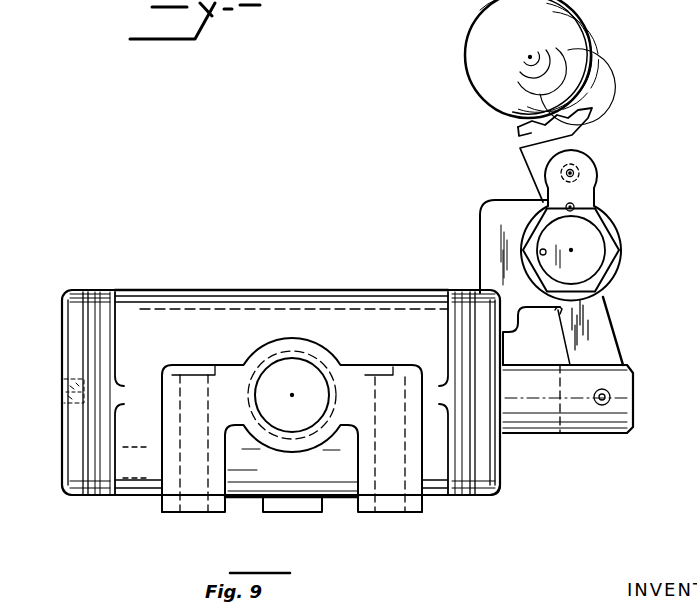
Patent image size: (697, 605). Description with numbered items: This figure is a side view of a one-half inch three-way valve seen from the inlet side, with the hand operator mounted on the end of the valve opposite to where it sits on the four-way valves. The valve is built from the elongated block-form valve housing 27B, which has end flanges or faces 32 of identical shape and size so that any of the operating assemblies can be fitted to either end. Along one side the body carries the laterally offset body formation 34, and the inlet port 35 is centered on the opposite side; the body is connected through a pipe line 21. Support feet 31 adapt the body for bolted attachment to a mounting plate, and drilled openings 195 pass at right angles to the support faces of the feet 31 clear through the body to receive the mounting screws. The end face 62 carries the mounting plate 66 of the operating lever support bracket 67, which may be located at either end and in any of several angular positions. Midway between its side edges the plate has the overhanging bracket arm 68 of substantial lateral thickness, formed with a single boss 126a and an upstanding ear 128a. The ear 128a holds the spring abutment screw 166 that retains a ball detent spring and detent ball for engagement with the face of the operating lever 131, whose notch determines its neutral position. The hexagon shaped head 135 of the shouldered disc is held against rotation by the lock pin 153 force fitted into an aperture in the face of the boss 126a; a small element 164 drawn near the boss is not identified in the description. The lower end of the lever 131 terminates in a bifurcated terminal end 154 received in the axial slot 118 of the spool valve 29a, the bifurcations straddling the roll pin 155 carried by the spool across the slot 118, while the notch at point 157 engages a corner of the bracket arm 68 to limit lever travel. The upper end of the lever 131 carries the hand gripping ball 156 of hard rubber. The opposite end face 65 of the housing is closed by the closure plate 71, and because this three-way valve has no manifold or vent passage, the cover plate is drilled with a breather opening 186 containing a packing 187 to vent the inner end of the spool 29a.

The pipe line 21 is at (153, 290).
The valve housing 27B is at (288, 300).
The end face of housing 65 is at (85, 315).
The closure plate 71 is at (63, 471).
The breather opening 186 is at (67, 387).
The packing 187 is at (67, 395).
The end flanges or faces 32 is at (97, 300).
The end face of body member 62 is at (477, 490).
The mounting plate 66 is at (492, 497).
The body formation 34 is at (252, 368).
The inlet port 35 is at (303, 373).
The support feet 31 is at (185, 513).
The drilled openings 195 is at (178, 472).
The operating lever support bracket 67 is at (478, 248).
The bracket arm 68 is at (511, 210).
The upstanding ear 128a is at (597, 158).
The spring abutment screw 166 is at (578, 173).
The lock pin 153 is at (578, 208).
The hexagon shaped head 135 is at (606, 252).
The boss 126a is at (606, 228).
The pin 164 is at (546, 251).
The operating lever 131 is at (565, 113).
The bifurcated terminal end 154 is at (608, 346).
The notch 157 is at (558, 312).
The spool valve 29a is at (517, 434).
The axial slot 118 is at (578, 434).
The roll pin 155 is at (606, 405).
The hand gripping ball 156 is at (570, 25).